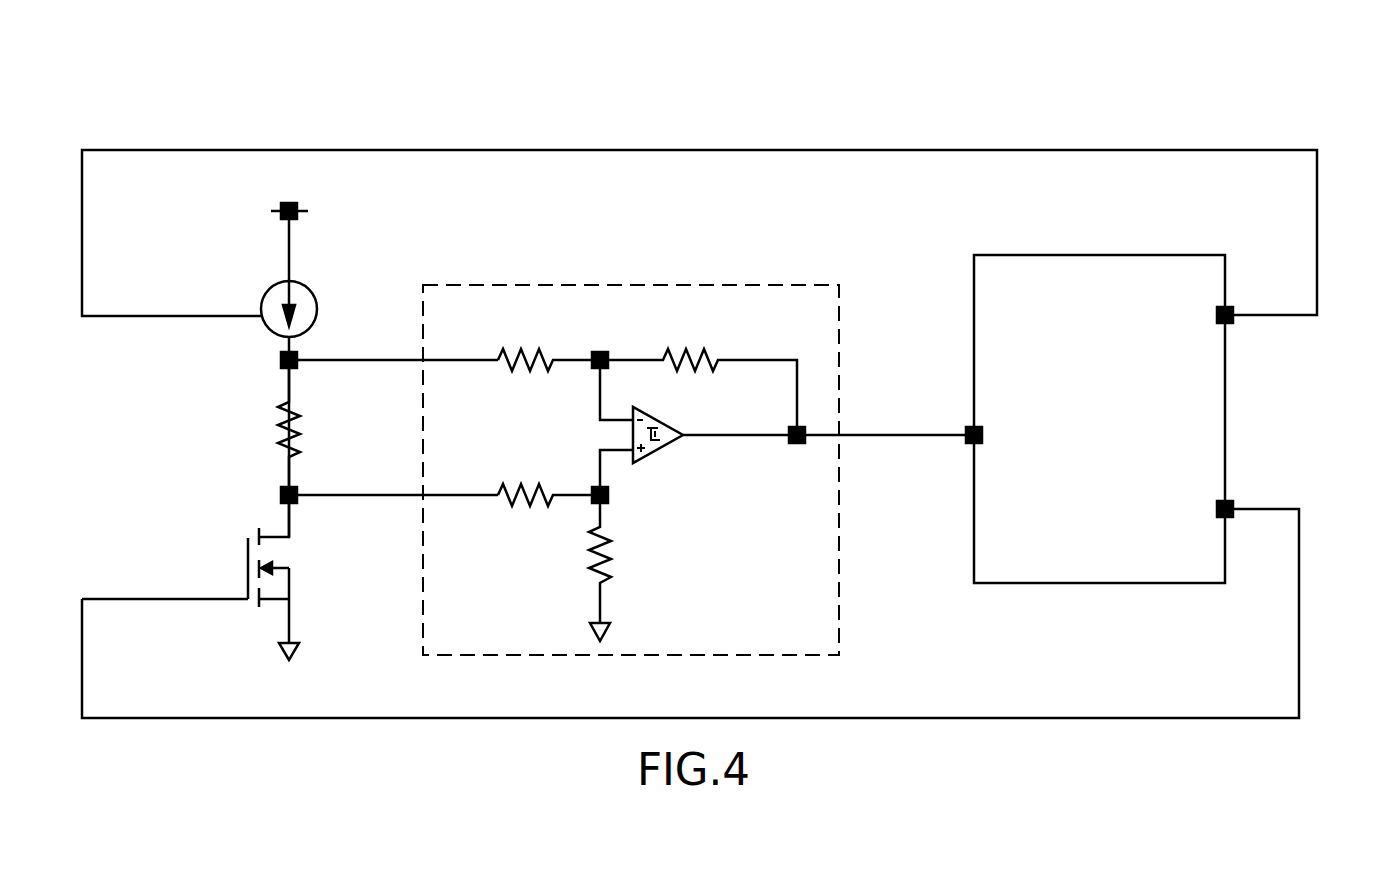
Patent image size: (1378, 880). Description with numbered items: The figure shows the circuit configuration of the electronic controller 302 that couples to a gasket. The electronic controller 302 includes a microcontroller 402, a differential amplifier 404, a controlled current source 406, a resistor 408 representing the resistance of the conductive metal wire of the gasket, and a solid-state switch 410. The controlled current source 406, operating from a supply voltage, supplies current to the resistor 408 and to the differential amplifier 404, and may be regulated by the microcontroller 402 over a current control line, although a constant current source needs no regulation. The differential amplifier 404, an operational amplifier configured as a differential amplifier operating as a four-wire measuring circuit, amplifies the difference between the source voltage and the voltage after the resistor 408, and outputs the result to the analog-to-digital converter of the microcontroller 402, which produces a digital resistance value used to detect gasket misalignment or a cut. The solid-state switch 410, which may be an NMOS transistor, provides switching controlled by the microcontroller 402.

The electronic controller 302 is at (1009, 118).
The microcontroller 402 is at (1129, 394).
The differential amplifier 404 is at (763, 283).
The controlled current source 406 is at (307, 282).
The resistor 408 is at (305, 430).
The solid-state switch 410 is at (298, 565).